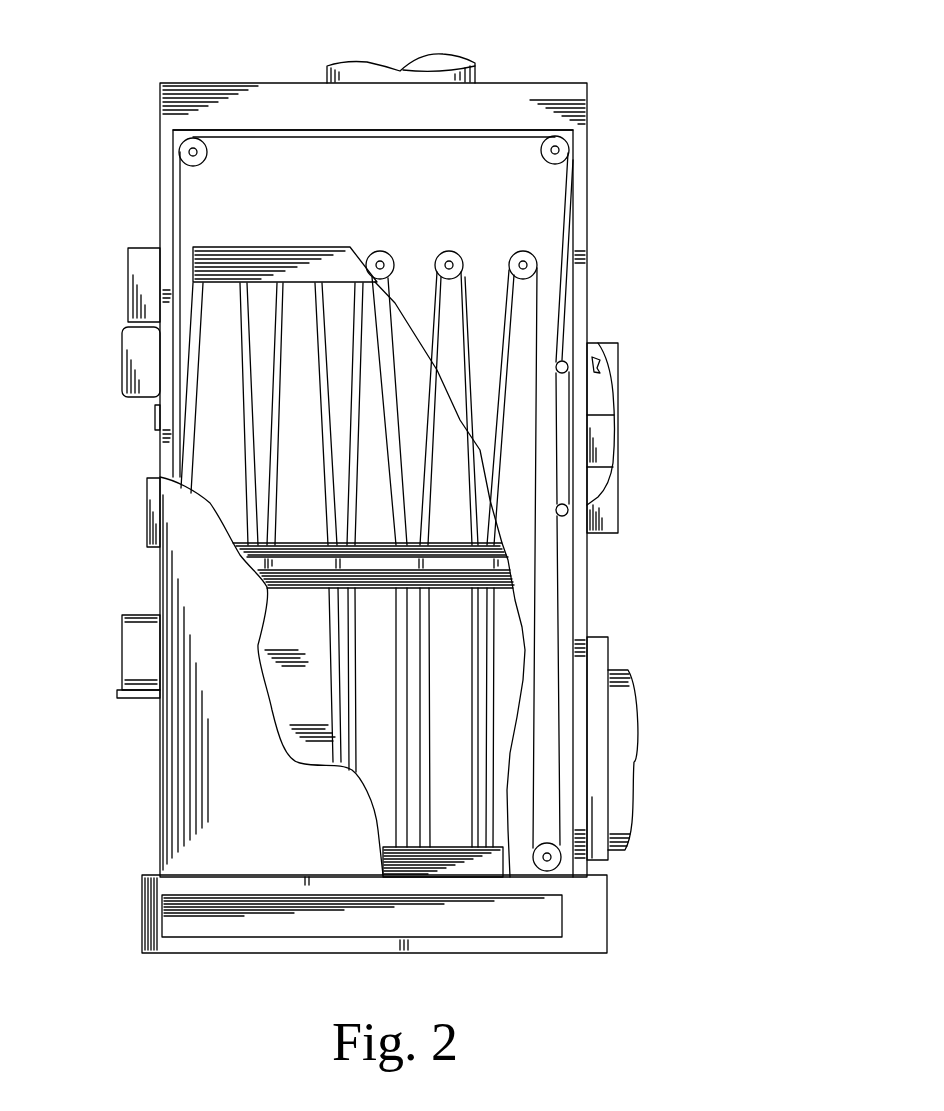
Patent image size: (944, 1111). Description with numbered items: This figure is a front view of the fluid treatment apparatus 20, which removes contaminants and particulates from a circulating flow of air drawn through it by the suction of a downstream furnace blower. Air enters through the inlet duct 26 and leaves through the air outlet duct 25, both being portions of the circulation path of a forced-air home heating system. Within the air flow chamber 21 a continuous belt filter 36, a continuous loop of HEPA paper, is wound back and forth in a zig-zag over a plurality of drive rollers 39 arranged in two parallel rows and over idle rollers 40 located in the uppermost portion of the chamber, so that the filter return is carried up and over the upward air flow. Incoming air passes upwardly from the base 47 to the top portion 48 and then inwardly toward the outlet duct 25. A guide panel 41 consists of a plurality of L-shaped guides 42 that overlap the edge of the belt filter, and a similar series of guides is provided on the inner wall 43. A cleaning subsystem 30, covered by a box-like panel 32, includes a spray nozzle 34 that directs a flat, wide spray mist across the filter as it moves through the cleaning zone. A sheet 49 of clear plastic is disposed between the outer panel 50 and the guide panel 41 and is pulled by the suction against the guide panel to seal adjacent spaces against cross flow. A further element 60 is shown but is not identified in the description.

The fluid treatment apparatus 20 is at (668, 155).
The air flow chamber 21 is at (355, 193).
The air outlet duct 25 is at (375, 68).
The inlet duct 26 is at (630, 705).
The cleaning subsystem 30 is at (632, 443).
The box-like panel 32 is at (620, 530).
The spray nozzle 34 is at (600, 372).
The continuous belt filter 36 is at (284, 134).
The drive rollers 39 is at (441, 250).
The idle rollers 40 is at (193, 140).
The guide panel 41 is at (205, 272).
The guide 42 is at (245, 355).
The inner wall 43 is at (485, 160).
The base 47 is at (288, 945).
The top portion 48 is at (160, 110).
The sheet of plastic material 49 is at (272, 622).
The outer panel 50 is at (187, 767).
The cross member 60 is at (587, 573).